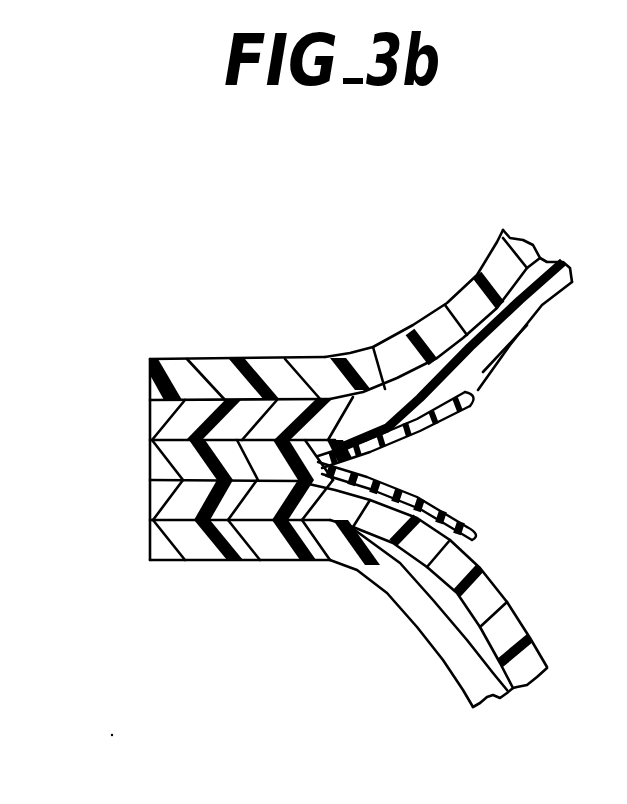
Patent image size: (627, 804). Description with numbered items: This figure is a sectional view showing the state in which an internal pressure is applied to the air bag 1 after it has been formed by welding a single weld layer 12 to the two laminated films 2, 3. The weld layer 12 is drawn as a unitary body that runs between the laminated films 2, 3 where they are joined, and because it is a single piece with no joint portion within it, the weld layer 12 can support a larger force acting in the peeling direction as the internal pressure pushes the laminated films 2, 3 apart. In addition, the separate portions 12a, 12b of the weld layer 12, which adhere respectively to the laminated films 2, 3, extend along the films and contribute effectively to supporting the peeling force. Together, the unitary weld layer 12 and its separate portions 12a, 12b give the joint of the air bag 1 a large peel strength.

The air bag 1 is at (265, 355).
The laminated film 2 is at (448, 333).
The laminated film 3 is at (423, 610).
The weld layer 12 is at (188, 438).
The separate portion of the weld layer 12a is at (471, 421).
The separate portion of the weld layer 12b is at (472, 505).